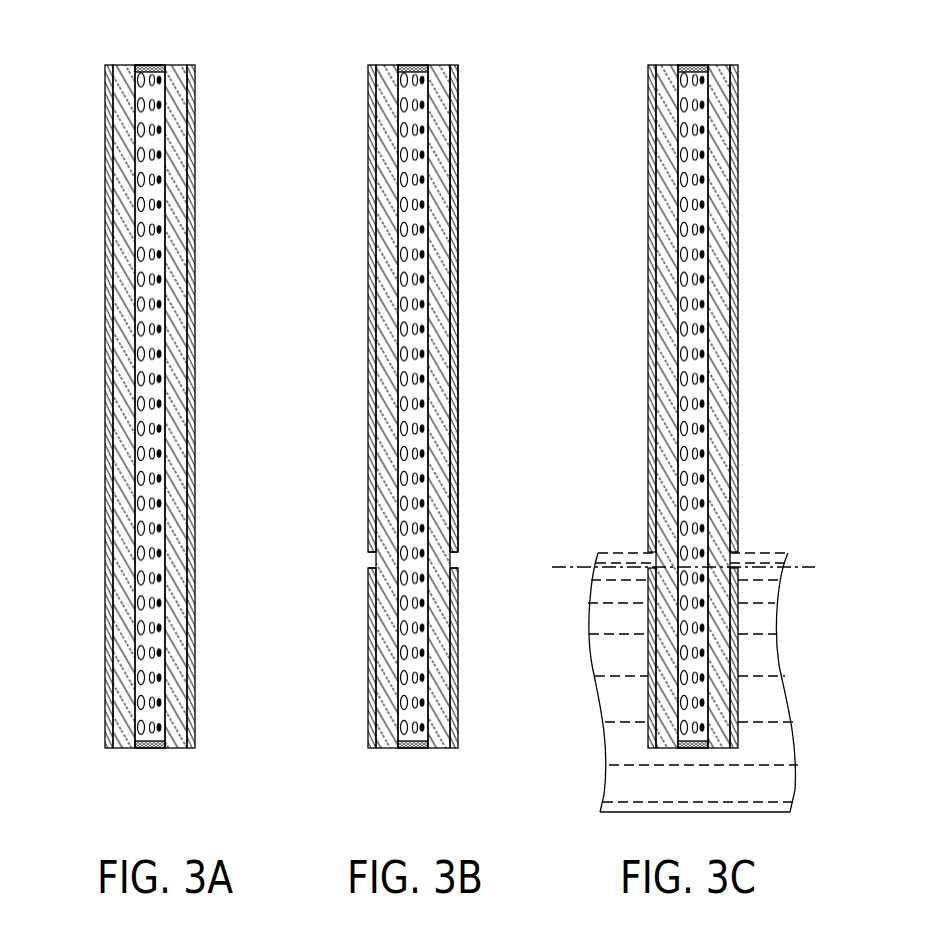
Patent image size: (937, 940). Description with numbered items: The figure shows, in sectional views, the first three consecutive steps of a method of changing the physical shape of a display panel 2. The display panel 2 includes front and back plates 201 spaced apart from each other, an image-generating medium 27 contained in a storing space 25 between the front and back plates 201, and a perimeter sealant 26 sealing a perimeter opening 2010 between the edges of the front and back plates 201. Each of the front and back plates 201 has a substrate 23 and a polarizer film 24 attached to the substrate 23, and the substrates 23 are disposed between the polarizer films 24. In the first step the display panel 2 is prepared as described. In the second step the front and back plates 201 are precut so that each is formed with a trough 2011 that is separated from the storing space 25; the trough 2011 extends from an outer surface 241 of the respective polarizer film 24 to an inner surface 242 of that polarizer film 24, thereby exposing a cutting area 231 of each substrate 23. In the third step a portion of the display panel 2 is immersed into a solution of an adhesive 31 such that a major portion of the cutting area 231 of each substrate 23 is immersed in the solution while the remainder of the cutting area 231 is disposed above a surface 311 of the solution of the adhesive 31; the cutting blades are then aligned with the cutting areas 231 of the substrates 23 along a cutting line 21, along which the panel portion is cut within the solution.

In FIG. 3A, the display panel 2 is at (156, 375).
In FIG. 3B, the display panel 2 is at (413, 406).
In FIG. 3C, the display panel 2 is at (677, 405).
In FIG. 3A, the front and back plates 201 is at (156, 406).
In FIG. 3B, the front and back plates 201 is at (413, 406).
In FIG. 3C, the front and back plates 201 is at (662, 406).
In FIG. 3A, the perimeter opening 2010 is at (152, 64).
In FIG. 3B, the trough 2011 is at (370, 555).
In FIG. 3C, the cutting line 21 is at (798, 567).
In FIG. 3A, the substrate 23 is at (120, 285).
In FIG. 3B, the substrate 23 is at (387, 78).
In FIG. 3C, the substrate 23 is at (665, 153).
In FIG. 3B, the cutting area 231 is at (372, 568).
In FIG. 3C, the cutting area 231 is at (648, 557).
In FIG. 3A, the polarizer film 24 is at (64, 296).
In FIG. 3B, the polarizer film 24 is at (416, 406).
In FIG. 3C, the polarizer film 24 is at (677, 406).
In FIG. 3B, the outer surface 241 is at (456, 420).
In FIG. 3B, the inner surface 242 is at (452, 478).
In FIG. 3A, the storing space 25 is at (154, 375).
In FIG. 3B, the storing space 25 is at (454, 406).
In FIG. 3C, the storing space 25 is at (736, 406).
In FIG. 3A, the perimeter sealant 26 is at (169, 64).
In FIG. 3A, the image-generating medium 27 is at (143, 183).
In FIG. 3B, the image-generating medium 27 is at (406, 278).
In FIG. 3C, the image-generating medium 27 is at (706, 350).
In FIG. 3C, the adhesive 31 is at (688, 622).
In FIG. 3C, the surface of the solution 311 is at (780, 554).